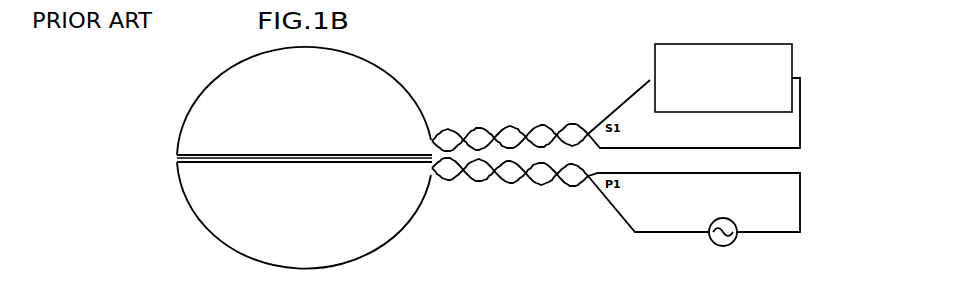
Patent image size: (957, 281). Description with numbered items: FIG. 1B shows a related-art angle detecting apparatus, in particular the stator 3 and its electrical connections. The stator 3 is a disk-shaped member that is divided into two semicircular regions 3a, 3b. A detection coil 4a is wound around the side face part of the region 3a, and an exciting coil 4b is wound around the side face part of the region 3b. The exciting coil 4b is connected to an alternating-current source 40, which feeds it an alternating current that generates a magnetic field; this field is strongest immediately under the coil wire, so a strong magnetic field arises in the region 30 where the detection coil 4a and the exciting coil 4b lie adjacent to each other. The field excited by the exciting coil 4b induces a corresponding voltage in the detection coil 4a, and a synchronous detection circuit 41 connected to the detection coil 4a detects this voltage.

The stator 3 is at (140, 90).
The semicircular region 3a is at (426, 50).
The semicircular region 3b is at (422, 255).
The region 30 is at (303, 157).
The detection coil 4a is at (227, 157).
The exciting coil 4b is at (243, 160).
The alternating-current source 40 is at (738, 220).
The synchronous detection circuit 41 is at (738, 44).